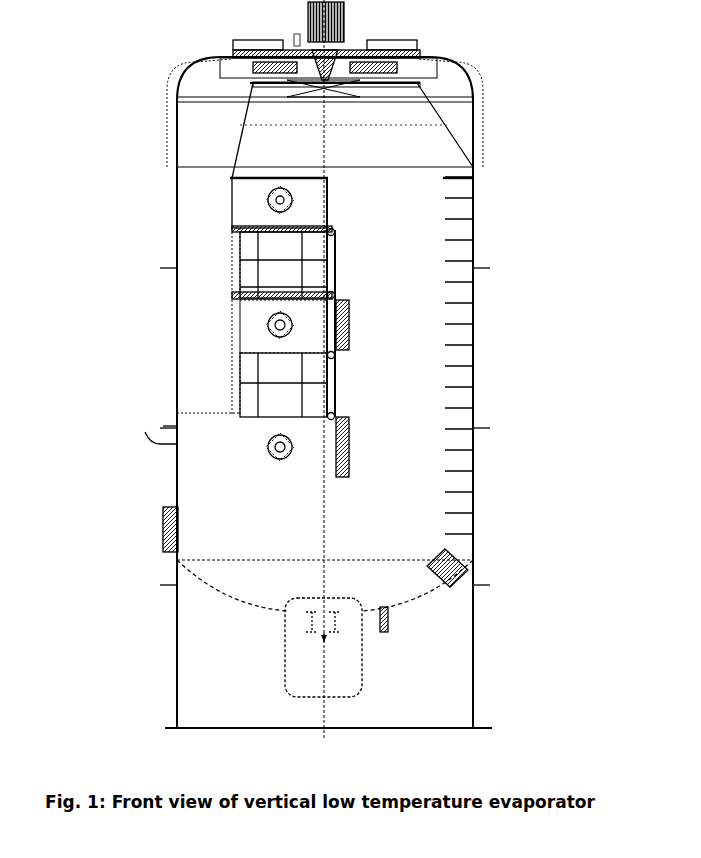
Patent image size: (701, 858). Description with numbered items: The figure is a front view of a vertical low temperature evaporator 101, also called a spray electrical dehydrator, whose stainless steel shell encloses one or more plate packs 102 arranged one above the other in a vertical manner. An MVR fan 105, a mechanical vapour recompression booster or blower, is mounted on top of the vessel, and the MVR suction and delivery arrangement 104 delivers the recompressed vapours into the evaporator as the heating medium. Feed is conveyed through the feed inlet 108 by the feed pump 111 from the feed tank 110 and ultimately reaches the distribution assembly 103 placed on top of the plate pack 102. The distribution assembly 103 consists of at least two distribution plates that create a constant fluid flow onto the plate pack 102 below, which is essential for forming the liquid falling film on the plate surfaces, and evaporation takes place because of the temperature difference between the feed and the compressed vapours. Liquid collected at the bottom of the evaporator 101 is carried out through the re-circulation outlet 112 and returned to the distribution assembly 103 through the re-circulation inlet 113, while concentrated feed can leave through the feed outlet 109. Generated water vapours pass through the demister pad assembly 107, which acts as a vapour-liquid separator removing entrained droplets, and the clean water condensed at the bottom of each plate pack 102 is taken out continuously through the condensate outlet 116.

The low temperature evaporator 101 is at (478, 523).
The plate pack 102 is at (256, 297).
The distribution assembly 103 is at (335, 130).
The MVR suction and delivery arrangement 104 is at (455, 135).
The MVR fan 105 is at (352, 47).
The demister pad assembly 107 is at (336, 298).
The feed inlet 108 is at (150, 433).
The feed outlet 109 is at (384, 636).
The feed tank 110 is at (323, 647).
The feed pump 111 is at (296, 200).
The re-circulation outlet 112 is at (334, 292).
The re-circulation inlet 113 is at (335, 235).
The condensate outlet 116 is at (172, 528).